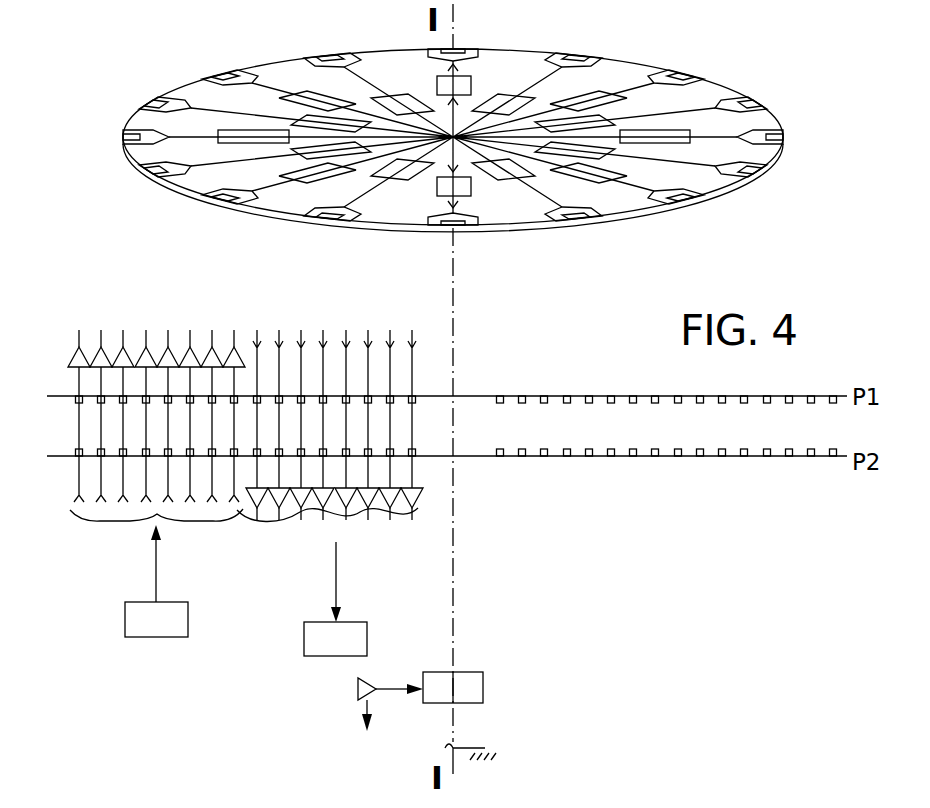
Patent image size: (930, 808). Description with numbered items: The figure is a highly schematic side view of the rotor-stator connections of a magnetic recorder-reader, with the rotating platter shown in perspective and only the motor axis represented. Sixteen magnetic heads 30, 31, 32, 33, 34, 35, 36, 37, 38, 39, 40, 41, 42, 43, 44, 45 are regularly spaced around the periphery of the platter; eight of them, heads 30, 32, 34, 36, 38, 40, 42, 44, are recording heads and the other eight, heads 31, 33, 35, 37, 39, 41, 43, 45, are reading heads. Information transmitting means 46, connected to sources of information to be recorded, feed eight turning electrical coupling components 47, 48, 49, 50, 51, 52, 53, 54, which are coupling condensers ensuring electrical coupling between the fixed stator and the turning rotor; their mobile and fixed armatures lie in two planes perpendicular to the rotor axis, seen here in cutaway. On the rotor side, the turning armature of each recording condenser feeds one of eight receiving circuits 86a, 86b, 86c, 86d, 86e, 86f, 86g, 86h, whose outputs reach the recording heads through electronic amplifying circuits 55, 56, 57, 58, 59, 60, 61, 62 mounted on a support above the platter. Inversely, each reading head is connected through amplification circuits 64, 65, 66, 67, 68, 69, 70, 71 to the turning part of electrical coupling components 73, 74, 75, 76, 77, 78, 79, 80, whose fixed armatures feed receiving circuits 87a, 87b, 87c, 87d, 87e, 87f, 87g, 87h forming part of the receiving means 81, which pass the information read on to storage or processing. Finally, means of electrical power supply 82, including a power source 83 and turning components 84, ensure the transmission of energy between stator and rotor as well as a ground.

The magnetic head 30 is at (226, 76).
The magnetic head 31 is at (332, 57).
The magnetic head 32 is at (456, 50).
The magnetic head 33 is at (582, 60).
The magnetic head 34 is at (684, 76).
The magnetic head 35 is at (765, 104).
The magnetic head 36 is at (790, 137).
The magnetic head 37 is at (766, 177).
The magnetic head 38 is at (704, 200).
The magnetic head 39 is at (590, 222).
The magnetic head 40 is at (458, 227).
The magnetic head 41 is at (330, 222).
The magnetic head 42 is at (226, 205).
The magnetic head 43 is at (140, 170).
The magnetic head 44 is at (122, 137).
The magnetic head 45 is at (142, 104).
The information transmitting means 46 is at (156, 581).
The turning electrical coupling component 47 is at (79, 446).
The turning electrical coupling component 48 is at (101, 405).
The turning electrical coupling component 49 is at (123, 446).
The turning electrical coupling component 50 is at (146, 405).
The turning electrical coupling component 51 is at (168, 446).
The turning electrical coupling component 52 is at (190, 405).
The turning electrical coupling component 53 is at (212, 446).
The turning electrical coupling component 54 is at (234, 405).
The electronic amplifying circuit 55 is at (312, 98).
The electronic amplifying circuit 56 is at (471, 90).
The electronic amplifying circuit 57 is at (584, 96).
The electronic amplifying circuit 58 is at (670, 130).
The electronic amplifying circuit 59 is at (622, 174).
The electronic amplifying circuit 60 is at (471, 190).
The electronic amplifying circuit 61 is at (328, 178).
The electronic amplifying circuit 62 is at (232, 143).
The amplification circuit 64 is at (404, 98).
The amplification circuit 65 is at (508, 96).
The amplification circuit 66 is at (612, 124).
The amplification circuit 67 is at (625, 155).
The amplification circuit 68 is at (522, 175).
The amplification circuit 69 is at (404, 178).
The amplification circuit 70 is at (300, 158).
The amplification circuit 71 is at (298, 118).
The electrical coupling component 73 is at (257, 446).
The electrical coupling component 74 is at (279, 405).
The electrical coupling component 75 is at (301, 446).
The electrical coupling component 76 is at (323, 405).
The electrical coupling component 77 is at (346, 446).
The electrical coupling component 78 is at (368, 405).
The electrical coupling component 79 is at (390, 446).
The electrical coupling component 80 is at (412, 405).
The receiving means 81 is at (335, 599).
The means of electrical power supply 82 is at (342, 691).
The power source 83 is at (377, 690).
The turning components 84 is at (483, 685).
The receiving circuit 86a is at (72, 362).
The receiving circuit 86b is at (94, 362).
The receiving circuit 86c is at (116, 362).
The receiving circuit 86d is at (139, 362).
The receiving circuit 86e is at (161, 362).
The receiving circuit 86f is at (183, 362).
The receiving circuit 86g is at (205, 362).
The receiving circuit 86h is at (228, 360).
The receiving circuit 87a is at (248, 513).
The receiving circuit 87b is at (278, 513).
The receiving circuit 87c is at (300, 520).
The receiving circuit 87d is at (318, 518).
The receiving circuit 87e is at (345, 520).
The receiving circuit 87f is at (368, 523).
The receiving circuit 87g is at (392, 520).
The receiving circuit 87h is at (418, 503).